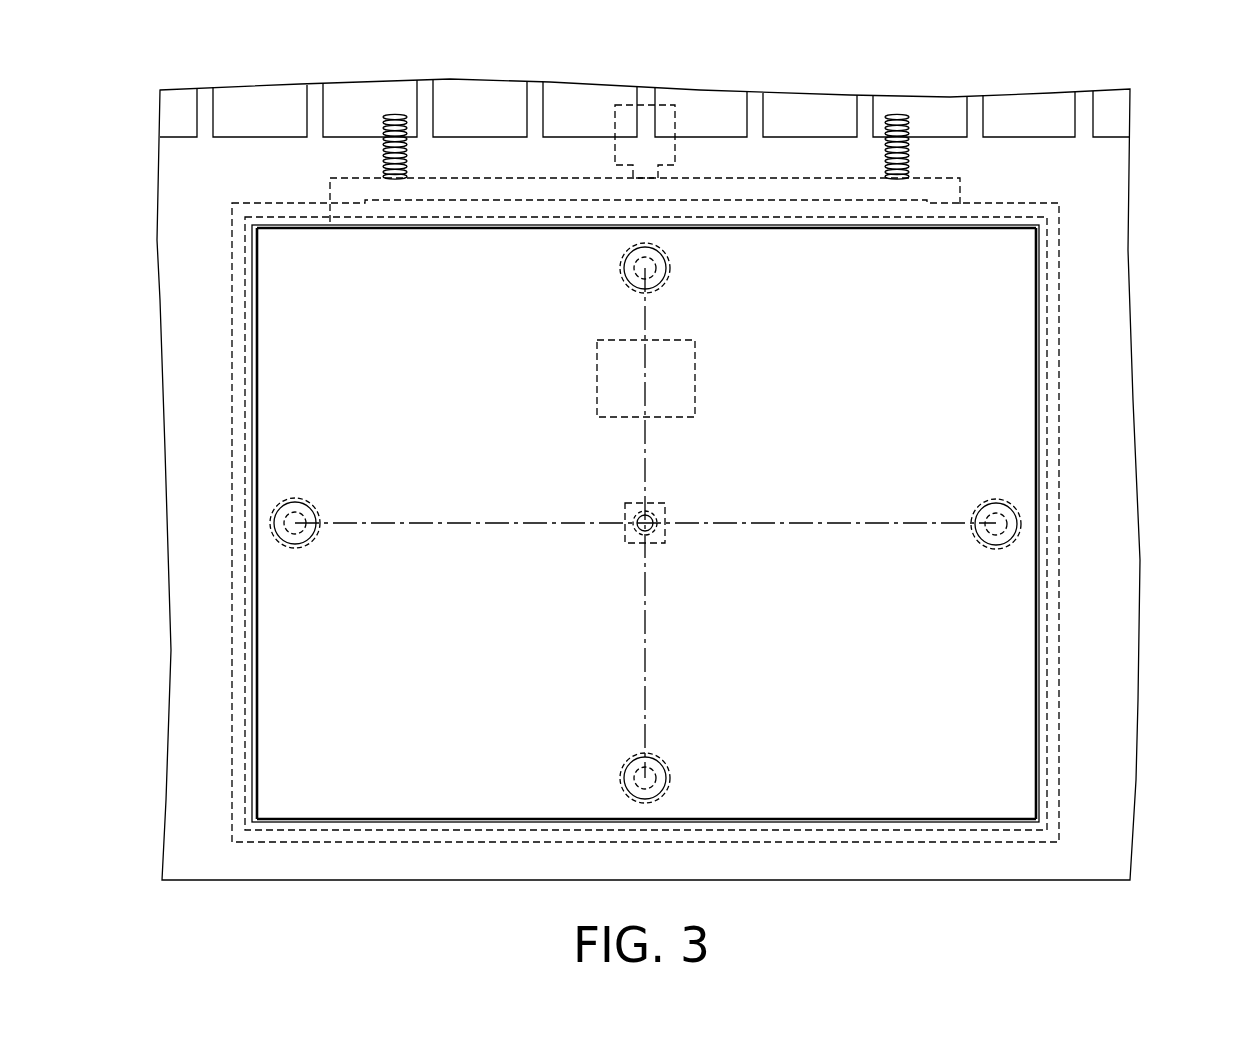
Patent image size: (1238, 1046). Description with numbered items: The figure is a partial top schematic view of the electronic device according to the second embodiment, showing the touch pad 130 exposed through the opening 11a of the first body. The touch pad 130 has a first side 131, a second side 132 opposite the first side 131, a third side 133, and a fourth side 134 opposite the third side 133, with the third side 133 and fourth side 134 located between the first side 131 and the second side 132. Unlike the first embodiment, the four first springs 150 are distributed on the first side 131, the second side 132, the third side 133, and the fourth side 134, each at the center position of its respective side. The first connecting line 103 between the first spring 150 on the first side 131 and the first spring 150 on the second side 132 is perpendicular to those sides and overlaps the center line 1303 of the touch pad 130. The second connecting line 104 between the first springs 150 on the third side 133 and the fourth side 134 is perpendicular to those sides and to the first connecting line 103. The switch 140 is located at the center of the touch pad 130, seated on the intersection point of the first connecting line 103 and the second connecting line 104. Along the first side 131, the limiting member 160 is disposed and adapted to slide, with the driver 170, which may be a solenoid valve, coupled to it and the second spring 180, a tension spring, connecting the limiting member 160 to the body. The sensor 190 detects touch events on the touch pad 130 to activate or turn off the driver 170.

The opening 11a is at (1036, 673).
The second connecting line 104 is at (498, 522).
The touch pad 130 is at (653, 552).
The first side 131 is at (985, 227).
The second side 132 is at (410, 820).
The third side 133 is at (257, 628).
The fourth side 134 is at (1036, 628).
The switch 140 is at (657, 513).
The first springs 150 is at (673, 263).
The limiting member 160 is at (348, 222).
The driver 170 is at (667, 105).
The second spring 180 is at (395, 115).
The sensor 190 is at (695, 368).
The center line 1303 is at (716, 523).
The first connecting line 103 is at (647, 665).